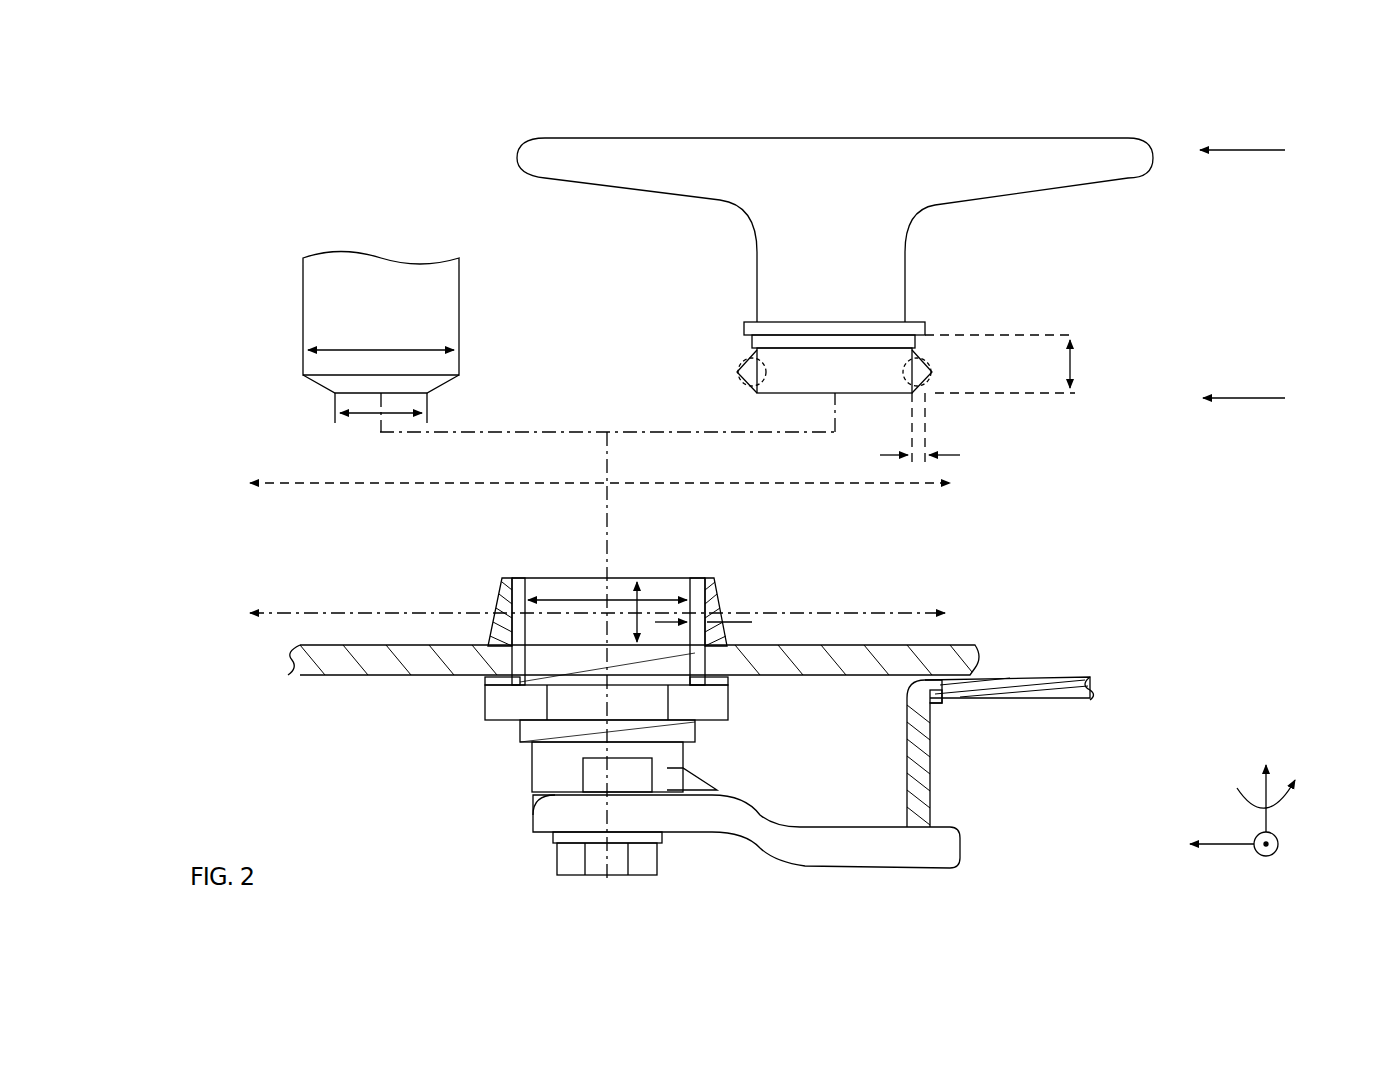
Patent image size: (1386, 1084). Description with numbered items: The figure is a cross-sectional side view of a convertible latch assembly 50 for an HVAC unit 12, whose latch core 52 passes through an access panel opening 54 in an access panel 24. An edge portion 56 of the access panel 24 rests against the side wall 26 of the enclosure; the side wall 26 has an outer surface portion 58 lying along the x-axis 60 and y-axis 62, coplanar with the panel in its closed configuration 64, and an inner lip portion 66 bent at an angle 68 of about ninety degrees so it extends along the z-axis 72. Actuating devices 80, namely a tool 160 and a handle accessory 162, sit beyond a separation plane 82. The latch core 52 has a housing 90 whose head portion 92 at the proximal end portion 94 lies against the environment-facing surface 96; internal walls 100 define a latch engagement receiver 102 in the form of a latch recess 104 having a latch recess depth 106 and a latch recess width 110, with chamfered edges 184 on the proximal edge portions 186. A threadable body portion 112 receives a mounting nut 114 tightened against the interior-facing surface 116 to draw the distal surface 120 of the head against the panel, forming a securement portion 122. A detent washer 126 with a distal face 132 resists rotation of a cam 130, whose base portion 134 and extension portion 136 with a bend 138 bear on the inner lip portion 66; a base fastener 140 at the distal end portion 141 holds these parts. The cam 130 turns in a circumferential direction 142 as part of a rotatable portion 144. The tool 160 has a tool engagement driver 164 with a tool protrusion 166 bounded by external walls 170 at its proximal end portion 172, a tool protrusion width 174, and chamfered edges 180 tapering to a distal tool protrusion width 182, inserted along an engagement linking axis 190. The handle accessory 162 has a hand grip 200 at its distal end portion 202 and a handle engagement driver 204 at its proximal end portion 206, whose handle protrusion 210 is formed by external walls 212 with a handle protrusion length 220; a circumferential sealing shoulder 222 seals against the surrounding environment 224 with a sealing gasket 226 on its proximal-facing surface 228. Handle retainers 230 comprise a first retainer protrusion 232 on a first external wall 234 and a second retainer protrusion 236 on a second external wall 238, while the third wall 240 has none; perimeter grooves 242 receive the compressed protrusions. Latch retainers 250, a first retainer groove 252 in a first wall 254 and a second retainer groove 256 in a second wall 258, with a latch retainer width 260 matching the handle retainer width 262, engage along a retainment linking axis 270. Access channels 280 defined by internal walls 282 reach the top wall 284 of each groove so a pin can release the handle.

The HVAC unit 12 is at (1247, 710).
The access panel 24 is at (680, 621).
The side wall 26 is at (1075, 672).
The convertible latch assembly 50 is at (884, 200).
The latch core 52 is at (462, 800).
The access panel opening 54 is at (698, 690).
The edge portion 56 is at (680, 621).
The outer surface portion 58 is at (1055, 656).
The x-axis 60 is at (1192, 843).
The y-axis 62 is at (1276, 855).
The closed configuration 64 is at (1077, 558).
The inner lip portion 66 is at (960, 753).
The angle 68 is at (944, 705).
The z-axis 72 is at (1260, 768).
The actuating devices 80 is at (458, 183).
The separation plane 82 is at (957, 487).
The housing 90 is at (590, 566).
The head portion 92 is at (716, 578).
The proximal end portion 94 is at (750, 578).
The environment-facing surface 96 is at (890, 645).
The internal walls 100 is at (609, 589).
The latch engagement receiver 102 is at (609, 589).
The latch recess 104 is at (658, 575).
The latch recess depth 106 is at (637, 578).
The latch recess width 110 is at (585, 600).
The threadable body portion 112 is at (505, 678).
The mounting nut 114 is at (731, 712).
The interior-facing surface 116 is at (882, 678).
The distal surface 120 is at (728, 674).
The securement portion 122 is at (478, 742).
The detent washer 126 is at (727, 770).
The cam 130 is at (779, 857).
The distal face 132 is at (548, 805).
The base portion 134 is at (672, 834).
The extension portion 136 is at (779, 853).
The bend 138 is at (779, 857).
The base fastener 140 is at (586, 872).
The distal end portion 141 is at (586, 868).
The circumferential direction 142 is at (1290, 802).
The rotatable portion 144 is at (935, 882).
The tool 160 is at (348, 306).
The handle accessory 162 is at (1203, 248).
The tool engagement driver 164 is at (249, 376).
The tool protrusion 166 is at (300, 348).
The external walls 170 is at (432, 330).
The proximal end portion 172 is at (484, 382).
The tool protrusion width 174 is at (374, 350).
The chamfered edges 180 is at (440, 388).
The distal tool protrusion width 182 is at (368, 415).
The chamfered edges 184 is at (689, 575).
The proximal edge portions 186 is at (530, 576).
The engagement linking axis 190 is at (655, 430).
The hand grip 200 is at (633, 138).
The distal end portion 202 is at (1266, 150).
The handle engagement driver 204 is at (811, 413).
The proximal end portion 206 is at (1268, 398).
The handle protrusion 210 is at (811, 413).
The external walls 212 is at (895, 407).
The handle protrusion length 220 is at (1076, 365).
The circumferential sealing shoulder 222 is at (926, 334).
The surrounding environment 224 is at (598, 250).
The sealing gasket 226 is at (930, 338).
The proximal-facing surface 228 is at (750, 345).
The handle retainers 230 is at (733, 370).
The first retainer protrusion 232 is at (752, 374).
The first external wall 234 is at (748, 346).
The second retainer protrusion 236 is at (920, 385).
The second external wall 238 is at (930, 347).
The third wall 240 is at (845, 375).
The perimeter grooves 242 is at (818, 412).
The latch retainers 250 is at (492, 606).
The first retainer groove 252 is at (490, 665).
The first wall 254 is at (497, 690).
The second retainer groove 256 is at (735, 640).
The second wall 258 is at (606, 702).
The latch retainer width 260 is at (735, 612).
The handle retainer width 262 is at (955, 458).
The retainment linking axis 270 is at (950, 610).
The access channels 280 is at (504, 576).
The internal walls 282 is at (500, 590).
The top wall 284 is at (503, 580).